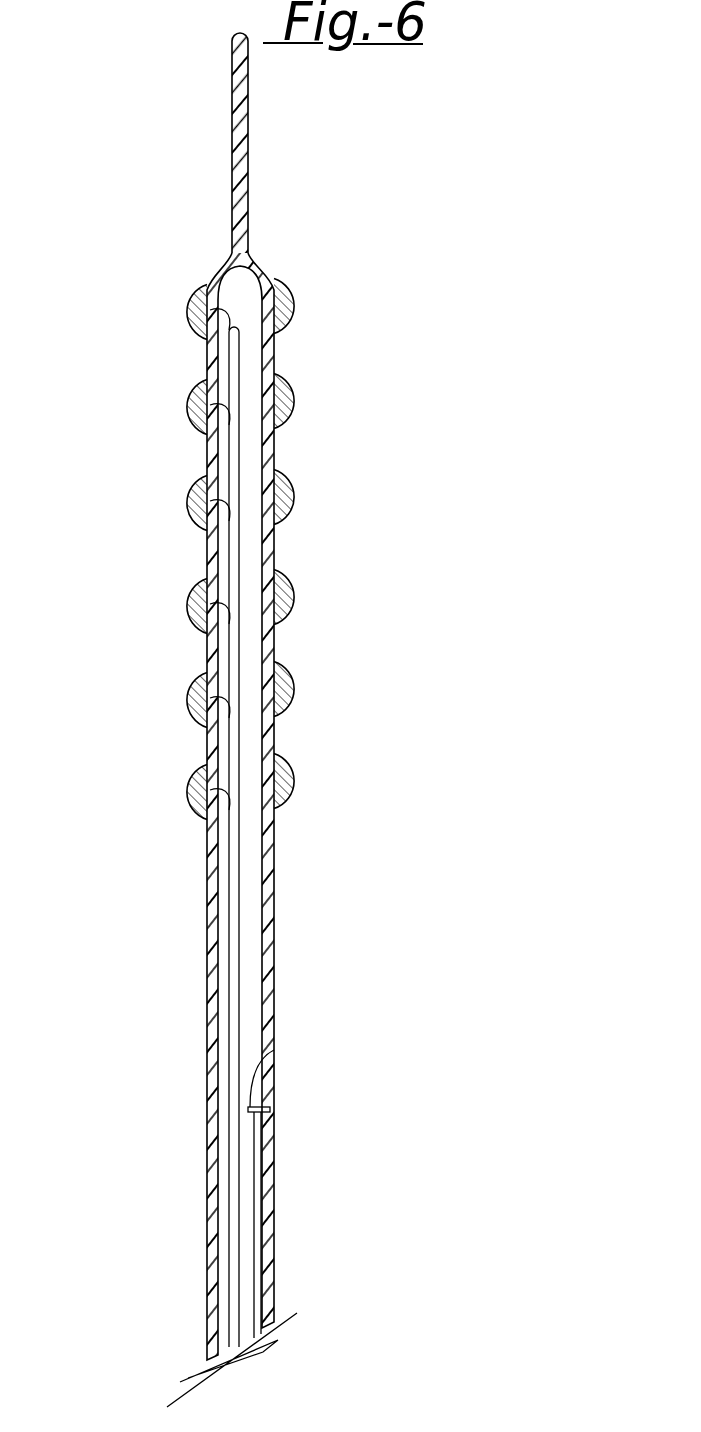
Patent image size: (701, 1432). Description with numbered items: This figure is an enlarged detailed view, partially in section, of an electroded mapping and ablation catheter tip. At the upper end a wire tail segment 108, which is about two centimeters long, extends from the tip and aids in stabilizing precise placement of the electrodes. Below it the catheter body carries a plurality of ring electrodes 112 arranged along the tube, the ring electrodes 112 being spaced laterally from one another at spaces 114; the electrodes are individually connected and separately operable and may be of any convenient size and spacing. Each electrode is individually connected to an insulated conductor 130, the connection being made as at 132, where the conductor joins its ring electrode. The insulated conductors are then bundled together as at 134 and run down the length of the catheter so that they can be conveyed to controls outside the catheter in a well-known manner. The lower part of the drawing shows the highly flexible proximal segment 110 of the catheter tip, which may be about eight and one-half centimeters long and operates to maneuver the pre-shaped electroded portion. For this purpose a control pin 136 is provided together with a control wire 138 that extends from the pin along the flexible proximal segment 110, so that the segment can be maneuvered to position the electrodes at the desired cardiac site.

The wire tail segment 108 is at (228, 114).
The flexible proximal segment 110 is at (275, 970).
The ring electrodes 112 is at (292, 767).
The spaces 114 is at (272, 547).
The insulated conductor 130 is at (208, 643).
The electrode connection 132 is at (210, 582).
The conductor bundle 134 is at (230, 1242).
The control pin 136 is at (268, 1053).
The control wire 138 is at (260, 1270).